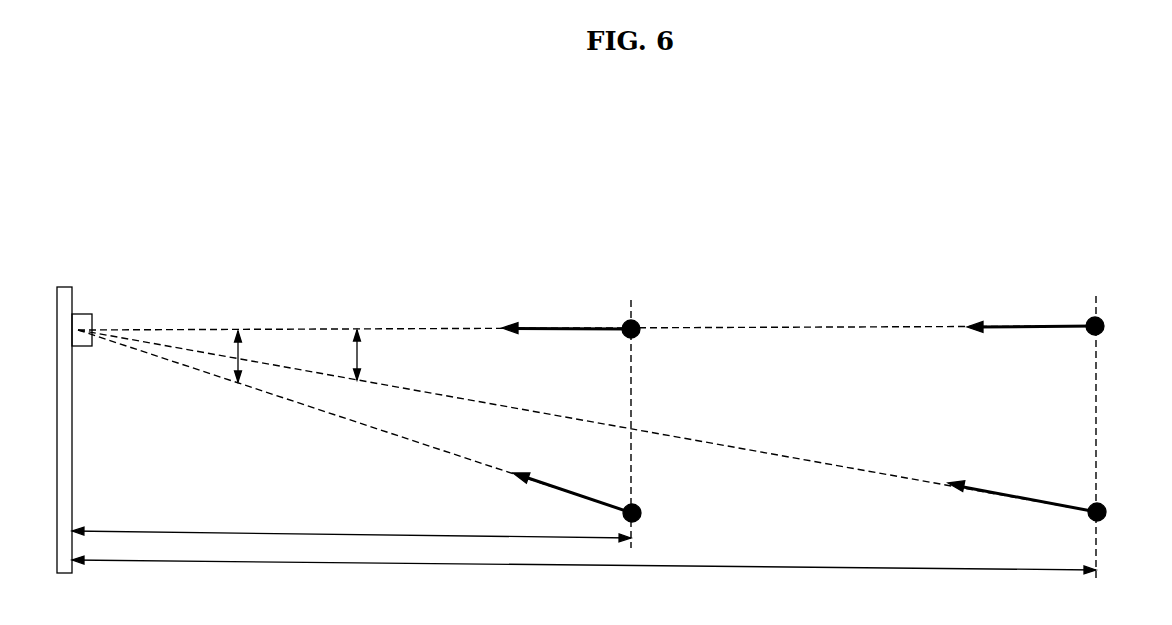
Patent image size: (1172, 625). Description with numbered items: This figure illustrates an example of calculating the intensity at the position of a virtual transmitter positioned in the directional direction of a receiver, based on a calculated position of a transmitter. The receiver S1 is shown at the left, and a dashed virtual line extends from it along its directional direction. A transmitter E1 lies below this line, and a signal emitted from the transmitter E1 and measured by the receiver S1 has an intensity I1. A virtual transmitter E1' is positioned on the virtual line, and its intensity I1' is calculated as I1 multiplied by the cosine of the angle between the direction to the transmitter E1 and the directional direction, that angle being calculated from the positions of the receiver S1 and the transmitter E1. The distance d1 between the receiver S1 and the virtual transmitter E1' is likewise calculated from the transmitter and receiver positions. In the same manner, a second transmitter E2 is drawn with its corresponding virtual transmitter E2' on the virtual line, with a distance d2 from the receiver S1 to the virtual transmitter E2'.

The receiver S1 is at (86, 316).
The transmitter E1 is at (592, 500).
The virtual transmitter E1' is at (585, 319).
The second object (emitter) at first position E2 is at (1041, 504).
The second object at second position E2' is at (1052, 329).
The distance d1 is at (351, 524).
The distance to second object d2 is at (584, 555).